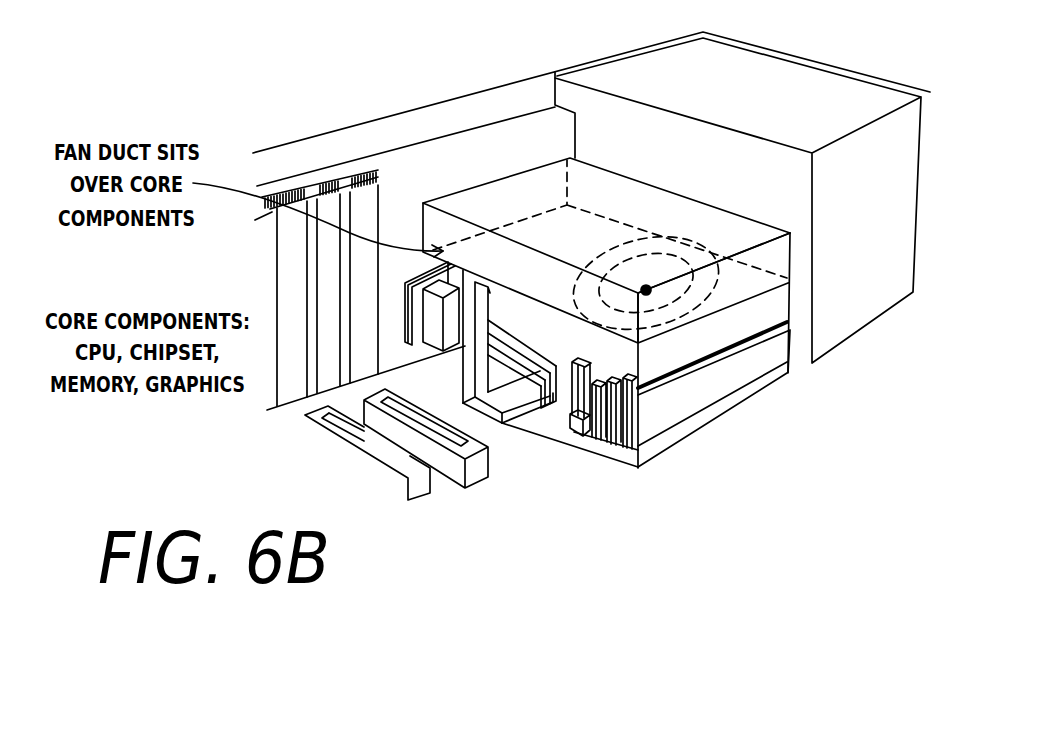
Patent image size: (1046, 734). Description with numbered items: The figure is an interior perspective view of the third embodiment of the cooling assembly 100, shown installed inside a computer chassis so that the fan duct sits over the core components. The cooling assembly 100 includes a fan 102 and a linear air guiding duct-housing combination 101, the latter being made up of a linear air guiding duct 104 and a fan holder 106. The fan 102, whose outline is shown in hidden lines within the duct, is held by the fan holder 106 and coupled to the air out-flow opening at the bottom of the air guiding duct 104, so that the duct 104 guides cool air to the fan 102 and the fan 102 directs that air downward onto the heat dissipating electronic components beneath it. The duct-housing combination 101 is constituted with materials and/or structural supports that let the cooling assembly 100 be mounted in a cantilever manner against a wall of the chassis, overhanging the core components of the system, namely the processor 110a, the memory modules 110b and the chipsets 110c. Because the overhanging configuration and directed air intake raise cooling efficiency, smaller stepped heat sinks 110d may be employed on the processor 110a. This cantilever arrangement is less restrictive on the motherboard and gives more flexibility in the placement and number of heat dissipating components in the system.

The cooling assembly 100 is at (530, 193).
The linear air guiding duct-housing combination 101 is at (803, 236).
The fan 102 is at (645, 284).
The linear air guiding duct 104 is at (765, 242).
The fan holder 106 is at (755, 316).
The processor 110a is at (480, 362).
The memory modules 110b is at (655, 404).
The chipsets 110c is at (582, 427).
The stepped heat sinks 110d is at (534, 383).